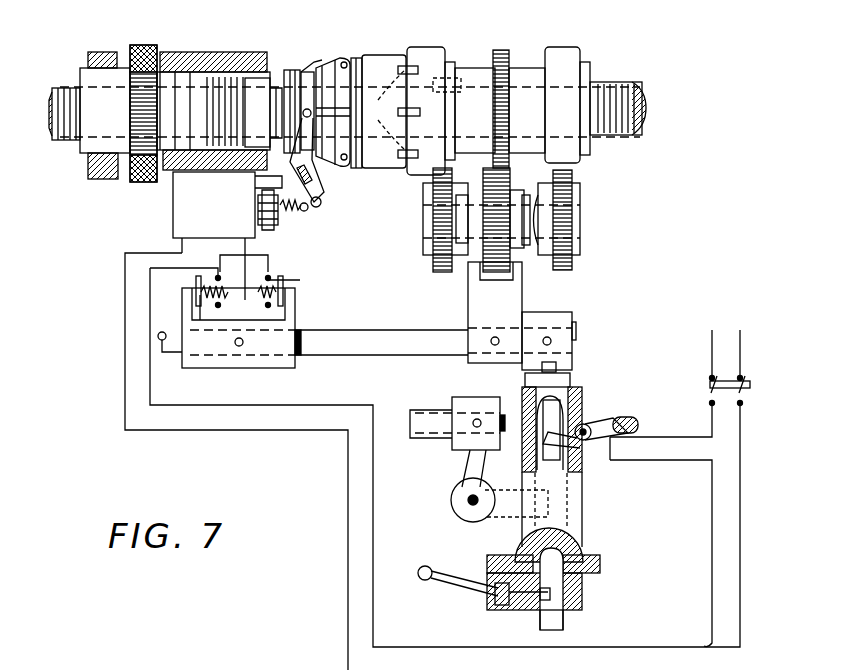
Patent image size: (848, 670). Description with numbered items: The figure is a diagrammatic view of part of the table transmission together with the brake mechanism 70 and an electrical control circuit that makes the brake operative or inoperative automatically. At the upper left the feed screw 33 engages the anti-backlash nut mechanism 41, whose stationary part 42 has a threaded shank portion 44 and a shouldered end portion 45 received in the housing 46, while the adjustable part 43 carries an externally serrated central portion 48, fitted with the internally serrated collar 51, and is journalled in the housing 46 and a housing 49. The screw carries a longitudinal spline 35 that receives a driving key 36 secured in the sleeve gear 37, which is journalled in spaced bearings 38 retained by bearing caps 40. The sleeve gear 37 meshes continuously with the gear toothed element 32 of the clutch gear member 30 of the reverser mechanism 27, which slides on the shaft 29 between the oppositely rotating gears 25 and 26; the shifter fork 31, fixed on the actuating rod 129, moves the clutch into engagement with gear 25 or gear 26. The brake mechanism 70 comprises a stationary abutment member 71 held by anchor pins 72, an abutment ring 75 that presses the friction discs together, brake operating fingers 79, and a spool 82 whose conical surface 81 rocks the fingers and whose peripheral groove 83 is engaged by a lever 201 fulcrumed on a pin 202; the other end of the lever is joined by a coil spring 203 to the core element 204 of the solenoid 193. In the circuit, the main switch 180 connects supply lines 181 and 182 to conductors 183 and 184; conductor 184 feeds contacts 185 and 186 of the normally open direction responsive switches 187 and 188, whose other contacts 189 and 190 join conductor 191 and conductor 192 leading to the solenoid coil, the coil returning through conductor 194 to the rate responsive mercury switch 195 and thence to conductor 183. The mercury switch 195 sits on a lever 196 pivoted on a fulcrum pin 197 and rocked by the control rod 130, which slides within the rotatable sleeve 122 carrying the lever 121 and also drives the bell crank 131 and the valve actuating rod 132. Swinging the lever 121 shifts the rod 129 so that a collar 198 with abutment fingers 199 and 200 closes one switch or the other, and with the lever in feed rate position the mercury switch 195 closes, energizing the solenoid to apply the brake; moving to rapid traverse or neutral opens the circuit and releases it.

The gear 25 is at (443, 272).
The gear 26 is at (572, 263).
The reverser mechanism 27 is at (592, 193).
The shaft 29 is at (533, 222).
The clutch gear member 30 is at (470, 230).
The shifter fork 31 is at (517, 293).
The gear toothed element 32 is at (497, 275).
The feed screw 33 is at (645, 107).
The longitudinal spline 35 is at (632, 82).
The driving key 36 is at (470, 67).
The sleeve gear 37 is at (295, 92).
The bearings 38 is at (447, 67).
The bearing caps 40 is at (412, 50).
The anti-backlash nut mechanism 41 is at (172, 65).
The stationary part 42 is at (203, 82).
The adjustable part 43 is at (85, 148).
The threaded shank portion 44 is at (193, 170).
The shouldered end portion 45 is at (152, 103).
The housing 46 is at (232, 60).
The externally serrated central portion 48 is at (130, 45).
The housing 49 is at (88, 58).
The internally serrated collar 51 is at (150, 50).
The brake mechanism 70 is at (326, 52).
The stationary abutment member 71 is at (377, 58).
The anchor pins 72 is at (394, 112).
The abutment ring 75 is at (355, 168).
The brake operating fingers 79 is at (357, 57).
The conical surface 81 is at (327, 75).
The spool 82 is at (318, 75).
The peripheral groove 83 is at (320, 73).
The lever 121 is at (423, 568).
The rotatable sleeve 122 is at (550, 545).
The actuating rod 129 is at (380, 350).
The control rod 130 is at (548, 570).
The bell crank 131 is at (475, 468).
The valve actuating rod 132 is at (438, 430).
The main switch 180 is at (727, 388).
The supply line 181 is at (712, 330).
The supply line 182 is at (742, 330).
The conductor 183 is at (663, 436).
The conductor 184 is at (269, 276).
The contact 185 is at (218, 306).
The contact 186 is at (268, 306).
The direction responsive switch 187 is at (188, 281).
The direction responsive switch 188 is at (293, 281).
The contact 189 is at (219, 277).
The contact 190 is at (277, 280).
The conductor 191 is at (248, 270).
The conductor 192 is at (245, 232).
The solenoid 193 is at (173, 205).
The conductor 194 is at (143, 253).
The mercury switch 195 is at (613, 417).
The lever 196 is at (577, 445).
The fulcrum pin 197 is at (588, 428).
The collar 198 is at (258, 366).
The abutment finger 199 is at (187, 308).
The abutment finger 200 is at (292, 303).
The lever 201 is at (318, 190).
The pin 202 is at (283, 183).
The coil spring 203 is at (293, 205).
The core element 204 is at (262, 208).